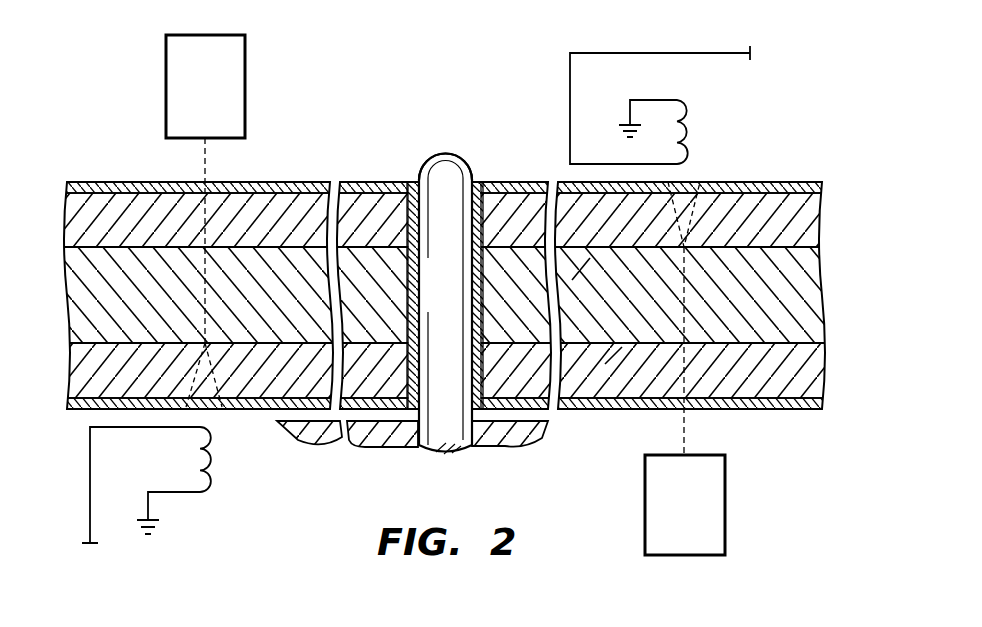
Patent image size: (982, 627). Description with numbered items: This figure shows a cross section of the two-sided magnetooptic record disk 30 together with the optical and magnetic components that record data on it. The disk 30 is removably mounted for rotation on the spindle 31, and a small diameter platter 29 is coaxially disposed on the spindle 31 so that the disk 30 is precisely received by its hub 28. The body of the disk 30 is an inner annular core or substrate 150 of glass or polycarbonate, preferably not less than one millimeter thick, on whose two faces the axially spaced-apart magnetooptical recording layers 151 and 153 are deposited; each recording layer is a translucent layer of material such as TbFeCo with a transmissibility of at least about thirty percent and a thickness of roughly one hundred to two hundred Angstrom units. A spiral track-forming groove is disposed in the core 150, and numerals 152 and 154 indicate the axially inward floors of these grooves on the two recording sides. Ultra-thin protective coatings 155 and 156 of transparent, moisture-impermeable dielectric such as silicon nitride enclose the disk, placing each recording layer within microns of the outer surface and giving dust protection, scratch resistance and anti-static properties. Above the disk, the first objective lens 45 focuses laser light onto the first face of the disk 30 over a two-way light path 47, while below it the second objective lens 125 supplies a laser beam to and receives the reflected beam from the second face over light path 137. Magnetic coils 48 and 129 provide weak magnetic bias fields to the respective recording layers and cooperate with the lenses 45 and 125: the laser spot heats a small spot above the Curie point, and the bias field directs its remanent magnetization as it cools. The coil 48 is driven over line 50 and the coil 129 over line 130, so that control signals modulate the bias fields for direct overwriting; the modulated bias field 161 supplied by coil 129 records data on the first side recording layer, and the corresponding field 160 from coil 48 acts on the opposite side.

The hub 28 is at (470, 252).
The small diameter platter 29 is at (317, 433).
The magnetooptic record disk 30 is at (295, 182).
The spindle 31 is at (435, 163).
The first objective lens 45 is at (193, 101).
The two-way light path 47 is at (205, 172).
The magnetic coil 48 is at (208, 468).
The line 50 is at (146, 485).
The second objective lens 125 is at (665, 517).
The magnetic coil 129 is at (690, 118).
The line 130 is at (661, 82).
The light path 137 is at (684, 418).
The inner annular core 150 is at (742, 309).
The first recording layer 151 is at (807, 220).
The groove floor 152 is at (607, 249).
The second recording layer 153 is at (735, 382).
The groove floor 154 is at (621, 345).
The protective coating 155 is at (782, 182).
The protective coating 156 is at (777, 403).
The radiated signal paths 160 is at (192, 387).
The magnetic bias field 161 is at (673, 206).